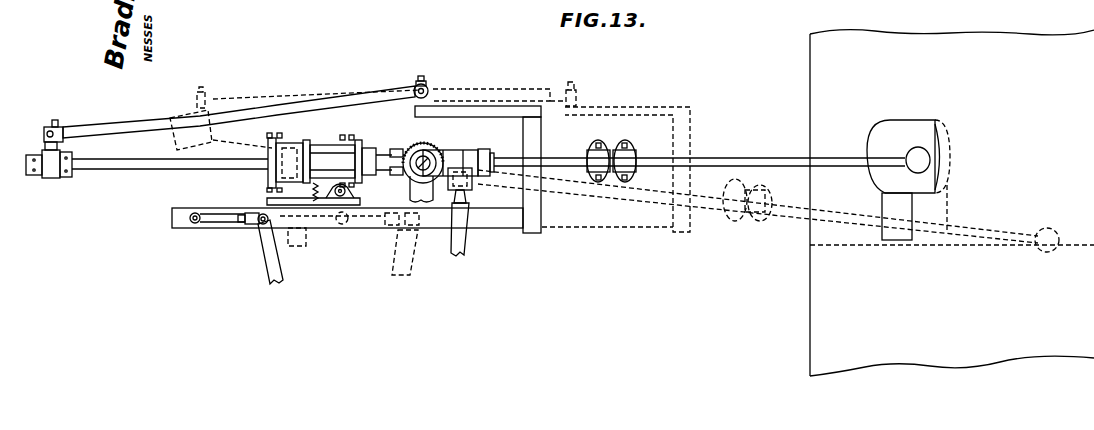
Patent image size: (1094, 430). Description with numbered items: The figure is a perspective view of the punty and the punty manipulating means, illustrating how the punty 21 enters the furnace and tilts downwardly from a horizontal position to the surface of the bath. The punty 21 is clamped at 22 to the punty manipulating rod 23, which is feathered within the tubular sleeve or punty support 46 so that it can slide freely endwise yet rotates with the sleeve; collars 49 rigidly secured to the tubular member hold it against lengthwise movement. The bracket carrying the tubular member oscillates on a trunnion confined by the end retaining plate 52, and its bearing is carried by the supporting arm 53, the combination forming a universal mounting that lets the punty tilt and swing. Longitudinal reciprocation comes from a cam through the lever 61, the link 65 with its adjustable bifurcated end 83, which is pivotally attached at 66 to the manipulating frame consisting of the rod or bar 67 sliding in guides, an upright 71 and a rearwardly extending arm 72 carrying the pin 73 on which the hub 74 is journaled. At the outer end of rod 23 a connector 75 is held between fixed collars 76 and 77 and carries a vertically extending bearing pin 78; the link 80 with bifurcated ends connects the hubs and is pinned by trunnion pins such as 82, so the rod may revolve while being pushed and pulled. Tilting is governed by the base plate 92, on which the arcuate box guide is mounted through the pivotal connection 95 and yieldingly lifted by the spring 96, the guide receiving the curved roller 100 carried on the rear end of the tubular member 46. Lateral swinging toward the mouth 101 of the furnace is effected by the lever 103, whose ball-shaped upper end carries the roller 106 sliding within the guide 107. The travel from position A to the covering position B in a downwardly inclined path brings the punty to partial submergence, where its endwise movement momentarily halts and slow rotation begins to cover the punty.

The punty 21 is at (776, 157).
The clamp 22 is at (632, 152).
The punty manipulating rod 23 is at (150, 170).
The tubular sleeve or punty support 46 is at (331, 158).
The collars 49 is at (368, 152).
The end retaining plate 52 is at (428, 158).
The supporting arm 53 is at (409, 183).
The lever 61 is at (268, 275).
The link 65 is at (222, 222).
The pivotal attachment 66 is at (192, 224).
The rod or bar 67 is at (508, 226).
The upright 71 is at (540, 186).
The rearwardly extending arm 72 is at (501, 106).
The pin 73 is at (422, 80).
The hub 74 is at (437, 98).
The connector 75 is at (52, 179).
The fixed collar 76 is at (74, 157).
The fixed collar 77 is at (34, 176).
The bearing pin 78 is at (58, 119).
The link 80 is at (277, 107).
The trunnion pin 82 is at (63, 131).
The bifurcated end 83 is at (258, 224).
The base plate 92 is at (333, 212).
The pivotal connection 95 is at (342, 198).
The spring 96 is at (317, 200).
The curved roller 100 is at (266, 180).
The mouth 101 is at (917, 138).
The lever 103 is at (457, 255).
The roller 106 is at (470, 160).
The guide 107 is at (470, 186).
The position A is at (920, 160).
The covering position B is at (1054, 232).